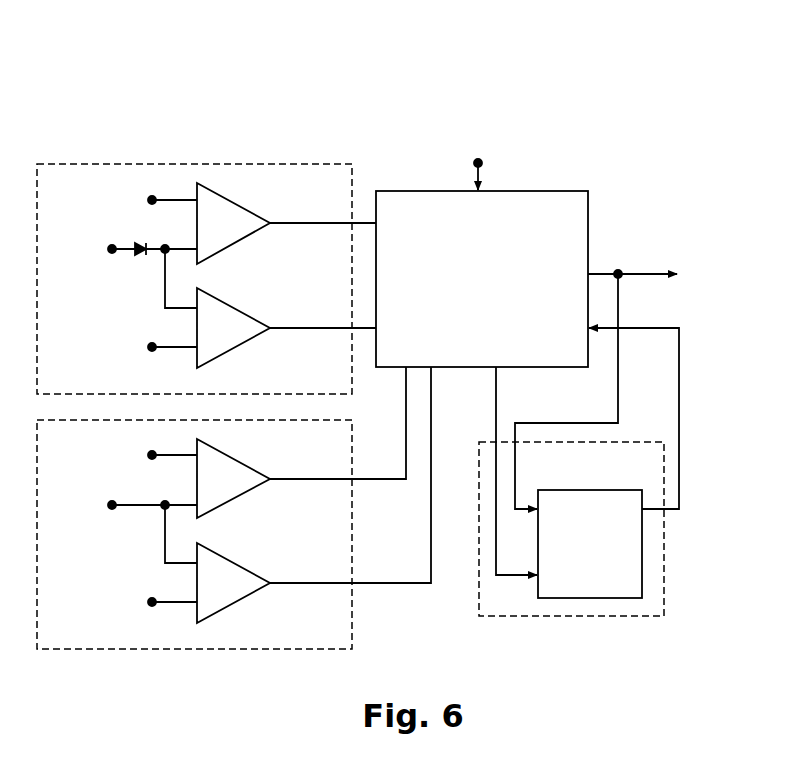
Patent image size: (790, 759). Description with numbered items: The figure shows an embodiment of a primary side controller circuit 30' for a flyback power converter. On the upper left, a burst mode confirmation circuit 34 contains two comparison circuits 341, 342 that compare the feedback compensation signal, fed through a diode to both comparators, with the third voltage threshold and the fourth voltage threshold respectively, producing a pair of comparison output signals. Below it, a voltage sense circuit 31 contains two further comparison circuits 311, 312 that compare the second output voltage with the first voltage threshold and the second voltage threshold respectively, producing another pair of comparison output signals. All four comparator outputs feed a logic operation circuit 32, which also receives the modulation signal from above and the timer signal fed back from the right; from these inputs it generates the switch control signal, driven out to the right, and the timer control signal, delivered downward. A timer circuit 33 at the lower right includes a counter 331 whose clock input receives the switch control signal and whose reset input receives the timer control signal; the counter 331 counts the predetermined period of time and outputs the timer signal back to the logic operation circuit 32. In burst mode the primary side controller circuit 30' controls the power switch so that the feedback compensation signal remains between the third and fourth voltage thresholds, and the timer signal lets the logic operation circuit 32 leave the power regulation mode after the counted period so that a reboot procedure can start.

The primary side controller circuit 30' is at (375, 375).
The burst mode confirmation circuit 34 is at (292, 379).
The comparison circuit 341 is at (240, 237).
The comparison circuit 342 is at (240, 341).
The voltage sense circuit 31 is at (292, 636).
The comparison circuit 311 is at (240, 492).
The comparison circuit 312 is at (240, 595).
The logic operation circuit 32 is at (464, 332).
The timer circuit 33 is at (616, 469).
The counter 331 is at (634, 587).